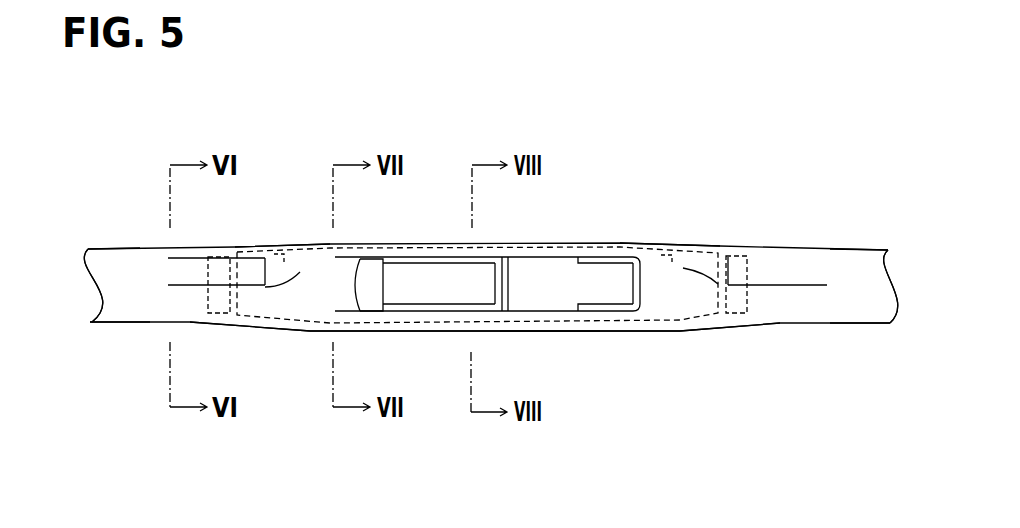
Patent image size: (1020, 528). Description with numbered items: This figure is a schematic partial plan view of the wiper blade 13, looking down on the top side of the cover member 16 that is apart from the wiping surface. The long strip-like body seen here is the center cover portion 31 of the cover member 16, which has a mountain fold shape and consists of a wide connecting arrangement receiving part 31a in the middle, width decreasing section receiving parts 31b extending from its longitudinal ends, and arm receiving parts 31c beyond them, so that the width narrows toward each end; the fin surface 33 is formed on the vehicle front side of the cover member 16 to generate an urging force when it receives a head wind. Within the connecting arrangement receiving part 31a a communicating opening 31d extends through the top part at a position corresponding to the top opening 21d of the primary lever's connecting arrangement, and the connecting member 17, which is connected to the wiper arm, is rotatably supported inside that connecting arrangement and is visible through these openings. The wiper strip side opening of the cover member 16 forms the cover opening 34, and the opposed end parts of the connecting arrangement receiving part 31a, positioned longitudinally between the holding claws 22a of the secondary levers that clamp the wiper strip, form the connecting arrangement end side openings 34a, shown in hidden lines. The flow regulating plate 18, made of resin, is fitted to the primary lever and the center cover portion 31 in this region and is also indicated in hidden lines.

The wiper blade 13 is at (634, 162).
The cover member 16 is at (830, 260).
The connecting member 17 is at (560, 270).
The flow regulating plate 18 is at (283, 327).
The top opening 21d is at (527, 270).
The holding claws 22a is at (217, 313).
The center cover portion 31 is at (773, 312).
The connecting arrangement receiving part 31a is at (425, 318).
The width decreasing section receiving parts 31b is at (313, 263).
The arm receiving parts 31c is at (140, 310).
The communicating opening 31d is at (543, 303).
The fin surface 33 is at (113, 311).
The cover opening 34 is at (440, 258).
The connecting arrangement end side openings 34a is at (287, 251).